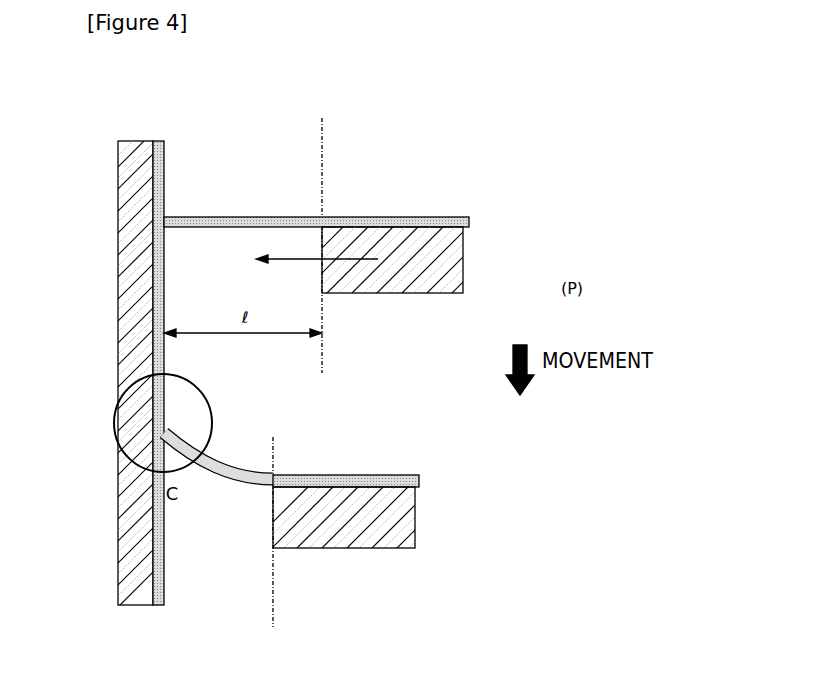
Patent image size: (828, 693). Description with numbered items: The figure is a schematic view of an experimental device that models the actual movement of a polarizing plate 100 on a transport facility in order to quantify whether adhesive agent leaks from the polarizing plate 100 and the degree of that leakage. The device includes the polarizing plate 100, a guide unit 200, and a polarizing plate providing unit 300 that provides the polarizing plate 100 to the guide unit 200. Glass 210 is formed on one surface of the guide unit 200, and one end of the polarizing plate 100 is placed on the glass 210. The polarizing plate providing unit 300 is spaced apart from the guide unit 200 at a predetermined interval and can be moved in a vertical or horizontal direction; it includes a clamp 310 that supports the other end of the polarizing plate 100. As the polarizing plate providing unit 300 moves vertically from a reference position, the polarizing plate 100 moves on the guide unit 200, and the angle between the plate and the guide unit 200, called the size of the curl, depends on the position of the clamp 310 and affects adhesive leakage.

The polarizing plate 100 is at (243, 217).
The guide unit 200 is at (132, 152).
The glass 210 is at (163, 158).
The polarizing plate providing unit 300 is at (408, 516).
The clamp 310 is at (380, 474).